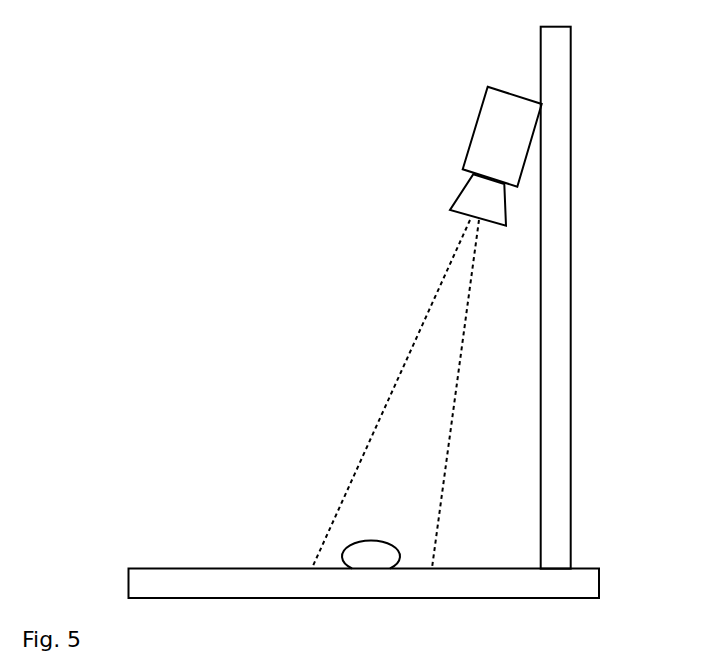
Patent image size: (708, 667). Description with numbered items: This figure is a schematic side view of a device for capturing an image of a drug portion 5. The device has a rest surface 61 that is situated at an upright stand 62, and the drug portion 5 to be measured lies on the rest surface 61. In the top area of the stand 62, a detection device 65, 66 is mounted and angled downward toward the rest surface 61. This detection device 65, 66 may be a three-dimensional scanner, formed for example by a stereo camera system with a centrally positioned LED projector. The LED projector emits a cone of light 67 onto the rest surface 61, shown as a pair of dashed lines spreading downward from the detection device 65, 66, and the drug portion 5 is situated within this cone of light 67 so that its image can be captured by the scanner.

The drug portion 5 is at (370, 555).
The rest surface 61 is at (585, 583).
The stand 62 is at (555, 58).
The detection device 65 is at (500, 142).
The detection device 66 is at (485, 198).
The cone of light 67 is at (413, 441).